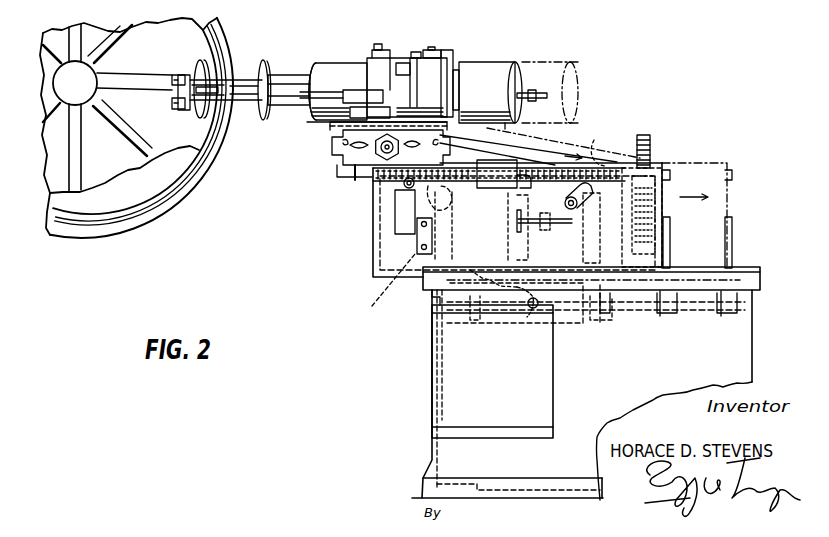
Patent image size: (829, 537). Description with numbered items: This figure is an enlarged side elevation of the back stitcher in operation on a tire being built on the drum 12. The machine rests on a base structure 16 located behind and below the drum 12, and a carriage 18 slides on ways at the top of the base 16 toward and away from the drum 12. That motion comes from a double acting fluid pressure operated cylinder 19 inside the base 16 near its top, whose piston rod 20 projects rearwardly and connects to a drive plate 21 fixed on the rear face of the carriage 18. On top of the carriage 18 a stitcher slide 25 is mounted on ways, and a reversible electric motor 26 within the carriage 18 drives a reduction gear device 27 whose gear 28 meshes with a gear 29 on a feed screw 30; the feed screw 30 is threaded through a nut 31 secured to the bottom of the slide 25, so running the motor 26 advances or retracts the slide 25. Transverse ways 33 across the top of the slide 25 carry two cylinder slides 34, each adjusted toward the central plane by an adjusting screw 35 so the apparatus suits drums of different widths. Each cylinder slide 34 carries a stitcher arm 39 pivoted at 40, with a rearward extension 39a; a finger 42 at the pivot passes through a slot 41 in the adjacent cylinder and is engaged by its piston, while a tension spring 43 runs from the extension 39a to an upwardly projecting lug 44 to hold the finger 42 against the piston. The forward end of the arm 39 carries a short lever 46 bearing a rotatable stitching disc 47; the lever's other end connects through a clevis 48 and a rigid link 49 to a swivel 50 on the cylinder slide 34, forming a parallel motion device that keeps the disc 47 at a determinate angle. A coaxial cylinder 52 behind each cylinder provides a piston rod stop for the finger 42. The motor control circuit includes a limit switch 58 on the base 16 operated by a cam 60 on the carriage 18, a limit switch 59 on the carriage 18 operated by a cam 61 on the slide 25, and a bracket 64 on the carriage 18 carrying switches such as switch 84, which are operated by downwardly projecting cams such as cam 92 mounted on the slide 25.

The drum 12 is at (130, 133).
The base structure 16 is at (448, 384).
The carriage 18 is at (380, 226).
The double acting fluid pressure operated cylinder 19 is at (504, 323).
The piston rod 20 is at (623, 300).
The drive plate 21 is at (670, 239).
The stitcher slide 25 is at (503, 160).
The reversible electric motor 26 is at (382, 288).
The reduction gear device 27 is at (580, 248).
The gear 28 is at (642, 217).
The gear 29 is at (648, 134).
The feed screw 30 is at (603, 150).
The nut 31 is at (499, 214).
The ways 33 is at (374, 150).
The cylinder slide 34 is at (350, 126).
The adjusting screw 35 is at (348, 166).
The stitcher arm 39 is at (296, 74).
The rearward extension 39a is at (407, 76).
The pivot 40 is at (376, 44).
The slot 41 is at (417, 52).
The finger 42 is at (403, 63).
The tension spring 43 is at (432, 50).
The lug 44 is at (452, 56).
The lever 46 is at (159, 92).
The stitching disc 47 is at (207, 68).
The clevis 48 is at (219, 120).
The link 49 is at (266, 120).
The swivel 50 is at (360, 74).
The fluid pressure operated cylinder 52 is at (492, 64).
The limit switch 58 is at (525, 318).
The limit switch 59 is at (541, 222).
The cam 60 is at (488, 268).
The cam 61 is at (498, 190).
The bracket 64 is at (430, 240).
The switch 84 is at (398, 226).
The cam 92 is at (356, 180).